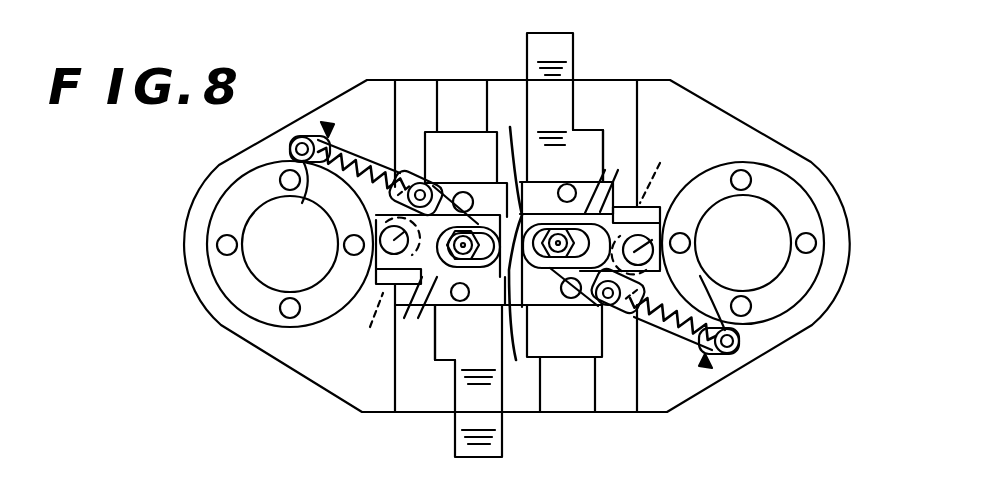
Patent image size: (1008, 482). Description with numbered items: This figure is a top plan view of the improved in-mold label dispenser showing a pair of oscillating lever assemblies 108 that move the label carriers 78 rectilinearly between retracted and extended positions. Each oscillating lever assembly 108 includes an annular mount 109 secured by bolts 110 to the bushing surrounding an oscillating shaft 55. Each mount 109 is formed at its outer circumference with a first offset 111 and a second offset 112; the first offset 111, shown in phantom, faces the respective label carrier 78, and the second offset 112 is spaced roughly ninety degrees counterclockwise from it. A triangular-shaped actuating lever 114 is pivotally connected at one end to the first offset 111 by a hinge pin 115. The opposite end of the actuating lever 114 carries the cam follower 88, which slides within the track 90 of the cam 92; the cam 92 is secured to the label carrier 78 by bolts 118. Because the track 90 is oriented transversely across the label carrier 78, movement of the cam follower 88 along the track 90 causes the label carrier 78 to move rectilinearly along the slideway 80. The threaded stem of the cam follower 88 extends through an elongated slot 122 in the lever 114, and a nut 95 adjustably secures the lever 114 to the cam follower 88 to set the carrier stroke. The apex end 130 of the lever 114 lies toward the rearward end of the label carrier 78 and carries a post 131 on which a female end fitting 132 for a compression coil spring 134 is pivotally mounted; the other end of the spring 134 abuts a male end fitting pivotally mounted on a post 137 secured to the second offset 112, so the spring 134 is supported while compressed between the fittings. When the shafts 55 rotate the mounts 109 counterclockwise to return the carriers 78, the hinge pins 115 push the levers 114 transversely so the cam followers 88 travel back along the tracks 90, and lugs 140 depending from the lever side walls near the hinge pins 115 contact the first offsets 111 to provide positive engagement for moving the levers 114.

The oscillating shaft 55 is at (257, 238).
The label carrier 78 is at (567, 50).
The slideway 80 is at (460, 93).
The cam follower 88 is at (476, 218).
The track 90 is at (463, 245).
The cam 92 is at (587, 193).
The nut 95 is at (610, 168).
The oscillating lever assembly 108 is at (327, 130).
The annular mount 109 is at (237, 297).
The bolt 110 is at (227, 247).
The first offset 111 is at (506, 234).
The second offset 112 is at (280, 152).
The actuating lever 114 is at (440, 216).
The hinge pin 115 is at (357, 250).
The bolt 118 is at (560, 190).
The elongated slot 122 is at (637, 205).
The apex end 130 is at (425, 182).
The post 131 is at (422, 182).
The female end fitting 132 is at (400, 172).
The coil spring 134 is at (360, 147).
The post 137 is at (516, 243).
The lug 140 is at (370, 290).